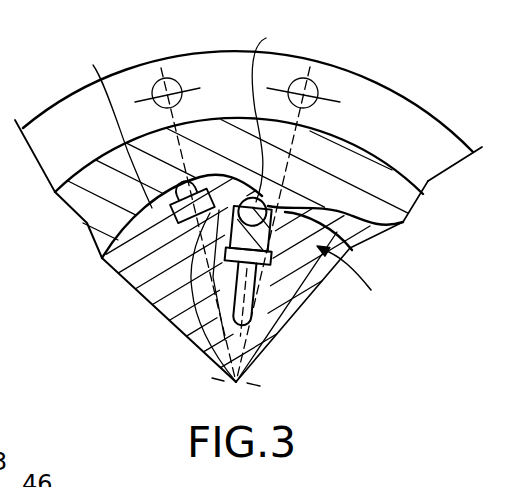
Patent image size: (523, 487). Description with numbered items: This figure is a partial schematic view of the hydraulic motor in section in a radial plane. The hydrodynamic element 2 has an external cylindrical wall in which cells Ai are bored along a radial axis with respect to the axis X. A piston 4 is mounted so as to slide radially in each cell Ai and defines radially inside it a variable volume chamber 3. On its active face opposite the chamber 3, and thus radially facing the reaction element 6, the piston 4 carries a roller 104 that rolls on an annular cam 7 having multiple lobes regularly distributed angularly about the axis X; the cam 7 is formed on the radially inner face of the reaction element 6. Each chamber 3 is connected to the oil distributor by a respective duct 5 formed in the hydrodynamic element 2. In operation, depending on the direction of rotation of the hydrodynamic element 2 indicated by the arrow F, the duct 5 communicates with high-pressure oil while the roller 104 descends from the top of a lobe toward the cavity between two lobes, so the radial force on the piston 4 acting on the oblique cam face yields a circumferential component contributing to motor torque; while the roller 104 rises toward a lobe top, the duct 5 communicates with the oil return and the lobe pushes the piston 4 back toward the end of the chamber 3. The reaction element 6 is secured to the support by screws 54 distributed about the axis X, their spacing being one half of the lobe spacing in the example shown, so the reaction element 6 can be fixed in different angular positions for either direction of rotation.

The hydrodynamic element 2 is at (173, 262).
The variable volume chamber 3 is at (294, 260).
The piston 4 is at (294, 222).
The duct 5 is at (253, 308).
The reaction element 6 is at (367, 105).
The annular cam 7 is at (114, 129).
The screws 54 is at (173, 78).
The roller 104 is at (282, 112).
The cells Ai is at (195, 333).
The axis X is at (235, 381).
The arrow indicating direction of rotation F is at (351, 275).